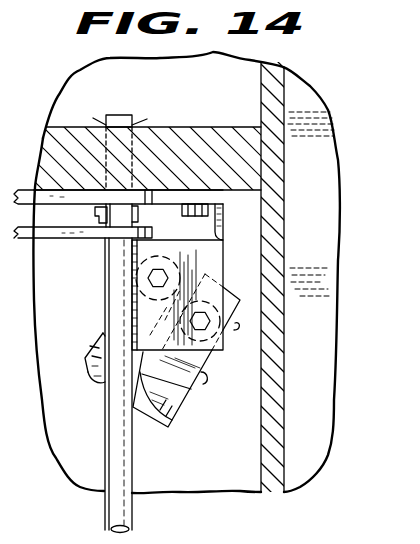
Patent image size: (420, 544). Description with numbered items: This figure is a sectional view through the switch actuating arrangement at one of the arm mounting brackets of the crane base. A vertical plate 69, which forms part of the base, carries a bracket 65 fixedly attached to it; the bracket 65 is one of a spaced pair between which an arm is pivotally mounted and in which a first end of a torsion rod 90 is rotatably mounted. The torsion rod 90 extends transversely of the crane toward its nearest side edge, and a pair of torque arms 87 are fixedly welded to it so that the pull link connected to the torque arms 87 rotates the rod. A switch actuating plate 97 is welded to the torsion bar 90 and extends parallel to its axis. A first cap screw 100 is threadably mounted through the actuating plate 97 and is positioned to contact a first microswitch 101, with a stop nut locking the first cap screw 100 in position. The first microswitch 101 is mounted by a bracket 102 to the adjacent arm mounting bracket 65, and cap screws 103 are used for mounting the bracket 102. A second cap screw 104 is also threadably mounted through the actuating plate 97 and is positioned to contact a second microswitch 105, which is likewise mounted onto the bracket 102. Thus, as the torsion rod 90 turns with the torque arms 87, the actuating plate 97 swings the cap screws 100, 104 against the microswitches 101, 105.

The bracket 65 is at (153, 140).
The vertical plate 69 is at (283, 413).
The torque arm 87 is at (25, 189).
The torsion rod 90 is at (122, 113).
The switch actuating plate 97 is at (219, 344).
The first cap screw 100 is at (208, 322).
The first microswitch 101 is at (186, 380).
The bracket 102 is at (221, 235).
The cap screw 103 is at (200, 204).
The second cap screw 104 is at (165, 278).
The second microswitch 105 is at (103, 340).